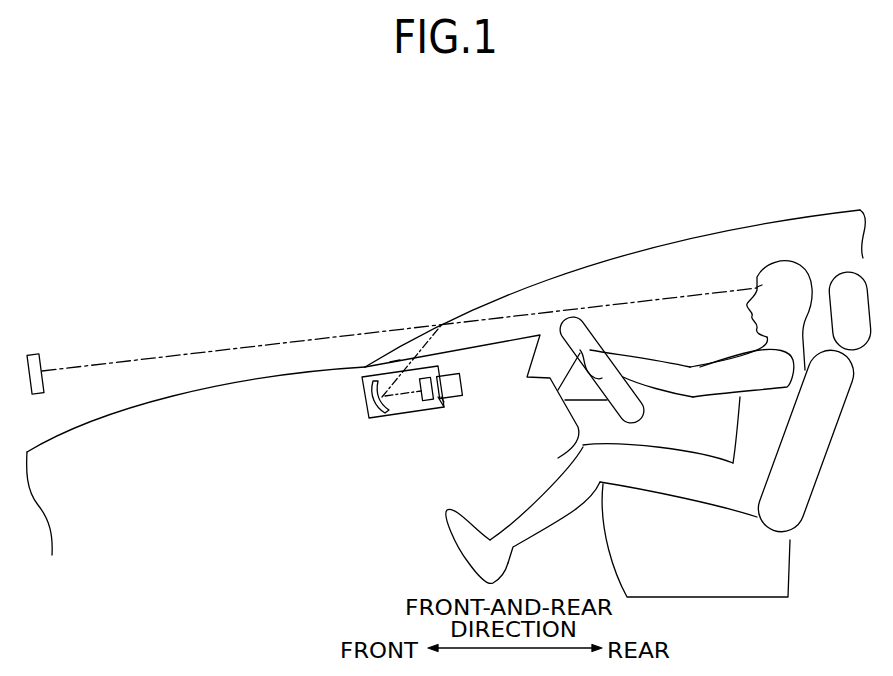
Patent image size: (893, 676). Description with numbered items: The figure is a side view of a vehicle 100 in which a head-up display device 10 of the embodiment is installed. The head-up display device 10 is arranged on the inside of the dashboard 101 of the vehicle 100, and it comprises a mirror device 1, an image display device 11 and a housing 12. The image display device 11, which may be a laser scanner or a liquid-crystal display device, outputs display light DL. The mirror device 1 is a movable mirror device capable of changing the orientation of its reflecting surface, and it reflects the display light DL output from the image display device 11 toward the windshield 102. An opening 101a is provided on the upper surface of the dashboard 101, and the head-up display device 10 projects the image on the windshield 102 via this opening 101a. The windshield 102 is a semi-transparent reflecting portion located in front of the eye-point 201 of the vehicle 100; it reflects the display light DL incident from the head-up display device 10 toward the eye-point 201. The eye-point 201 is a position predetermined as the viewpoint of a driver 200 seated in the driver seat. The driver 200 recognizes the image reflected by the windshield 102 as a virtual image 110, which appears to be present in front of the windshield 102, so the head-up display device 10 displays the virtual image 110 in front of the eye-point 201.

The mirror device 1 is at (367, 414).
The head-up display device 10 is at (366, 367).
The image display device 11 is at (442, 408).
The housing 12 is at (425, 410).
The vehicle 100 is at (695, 170).
The dashboard 101 is at (505, 340).
The opening 101a is at (397, 365).
The windshield 102 is at (468, 304).
The virtual image 110 is at (33, 353).
The driver 200 is at (810, 253).
The eye-point 201 is at (760, 268).
The display light DL is at (404, 398).